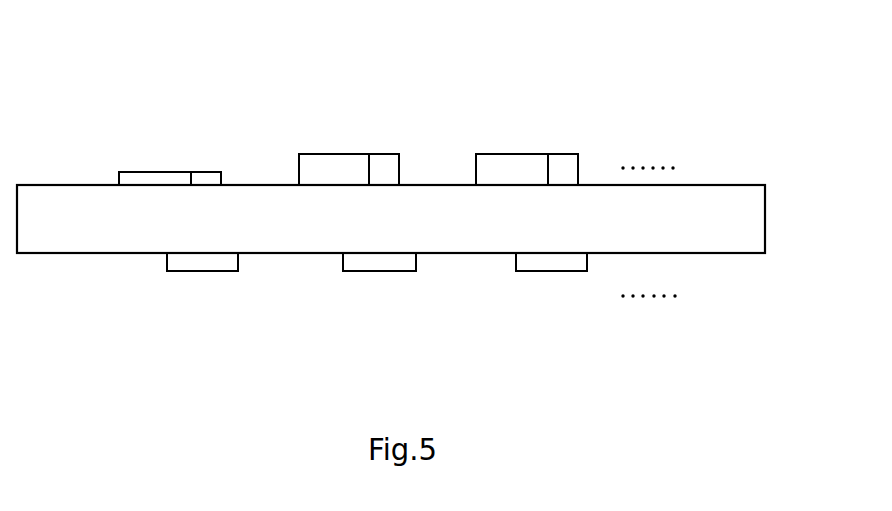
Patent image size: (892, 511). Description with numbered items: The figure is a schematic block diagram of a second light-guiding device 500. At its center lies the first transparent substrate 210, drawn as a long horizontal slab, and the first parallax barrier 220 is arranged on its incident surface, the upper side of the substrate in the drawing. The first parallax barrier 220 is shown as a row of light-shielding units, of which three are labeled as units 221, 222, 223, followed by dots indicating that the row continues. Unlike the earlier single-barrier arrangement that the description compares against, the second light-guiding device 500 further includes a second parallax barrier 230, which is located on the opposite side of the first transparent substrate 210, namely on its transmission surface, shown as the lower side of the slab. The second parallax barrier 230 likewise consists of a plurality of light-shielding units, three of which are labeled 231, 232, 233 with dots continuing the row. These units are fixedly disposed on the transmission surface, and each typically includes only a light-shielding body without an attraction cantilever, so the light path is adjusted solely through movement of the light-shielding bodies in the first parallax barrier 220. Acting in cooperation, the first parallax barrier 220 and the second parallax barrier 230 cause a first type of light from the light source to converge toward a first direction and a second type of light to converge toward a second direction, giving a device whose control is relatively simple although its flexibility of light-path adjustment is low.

The second light-guiding device 500 is at (87, 37).
The first transparent substrate 210 is at (766, 218).
The first parallax barrier 220 is at (693, 113).
The first electrode 221 is at (170, 151).
The second electrode 222 is at (349, 151).
The third electrode 223 is at (527, 151).
The second parallax barrier 230 is at (718, 312).
The first lower electrode 231 is at (202, 282).
The second lower electrode 232 is at (379, 282).
The third lower electrode 233 is at (551, 282).